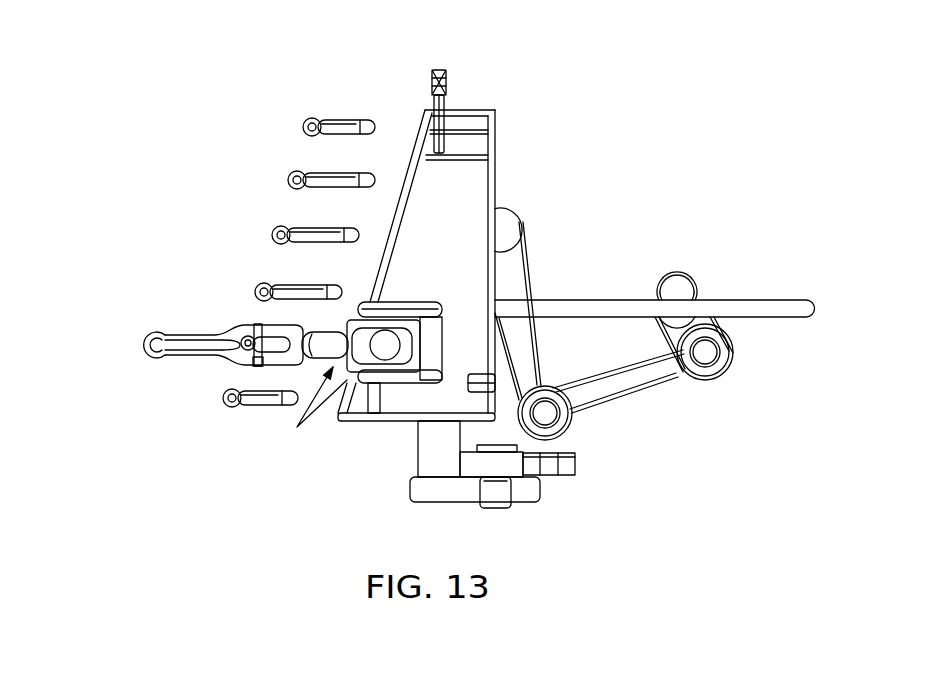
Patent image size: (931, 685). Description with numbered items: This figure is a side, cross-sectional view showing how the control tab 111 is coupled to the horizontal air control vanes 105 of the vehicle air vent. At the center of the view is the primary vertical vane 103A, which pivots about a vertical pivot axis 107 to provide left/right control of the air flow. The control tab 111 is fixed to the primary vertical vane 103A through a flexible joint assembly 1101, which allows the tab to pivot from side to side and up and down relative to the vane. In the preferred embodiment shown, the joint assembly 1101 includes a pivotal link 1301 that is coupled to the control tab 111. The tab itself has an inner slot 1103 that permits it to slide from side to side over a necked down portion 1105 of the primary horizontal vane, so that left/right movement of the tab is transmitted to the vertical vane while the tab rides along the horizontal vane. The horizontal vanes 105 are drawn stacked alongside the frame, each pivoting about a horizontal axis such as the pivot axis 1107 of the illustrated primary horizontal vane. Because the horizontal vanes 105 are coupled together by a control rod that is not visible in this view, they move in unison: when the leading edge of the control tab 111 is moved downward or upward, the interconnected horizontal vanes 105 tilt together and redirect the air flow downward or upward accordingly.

The primary vertical vane 103A is at (470, 270).
The vertical pivot axis 107 is at (446, 82).
The horizontal air control vanes 105 is at (265, 290).
The pivot axis of horizontal vane 1107 is at (298, 176).
The flexible joint assembly 1101 is at (293, 403).
The control tab 111 is at (187, 333).
The necked down portion 1105 is at (257, 327).
The inner slot 1103 is at (267, 363).
The pivotal link 1301 is at (327, 345).